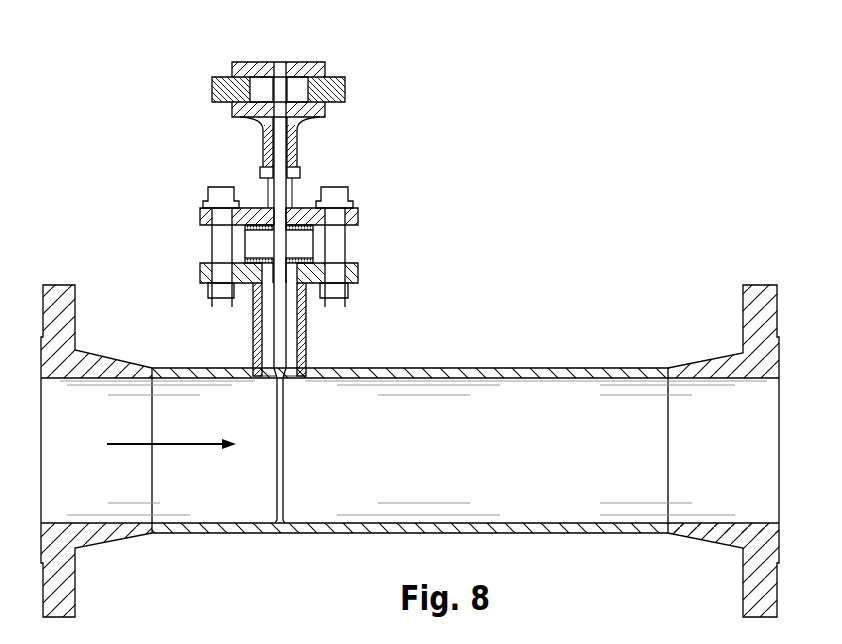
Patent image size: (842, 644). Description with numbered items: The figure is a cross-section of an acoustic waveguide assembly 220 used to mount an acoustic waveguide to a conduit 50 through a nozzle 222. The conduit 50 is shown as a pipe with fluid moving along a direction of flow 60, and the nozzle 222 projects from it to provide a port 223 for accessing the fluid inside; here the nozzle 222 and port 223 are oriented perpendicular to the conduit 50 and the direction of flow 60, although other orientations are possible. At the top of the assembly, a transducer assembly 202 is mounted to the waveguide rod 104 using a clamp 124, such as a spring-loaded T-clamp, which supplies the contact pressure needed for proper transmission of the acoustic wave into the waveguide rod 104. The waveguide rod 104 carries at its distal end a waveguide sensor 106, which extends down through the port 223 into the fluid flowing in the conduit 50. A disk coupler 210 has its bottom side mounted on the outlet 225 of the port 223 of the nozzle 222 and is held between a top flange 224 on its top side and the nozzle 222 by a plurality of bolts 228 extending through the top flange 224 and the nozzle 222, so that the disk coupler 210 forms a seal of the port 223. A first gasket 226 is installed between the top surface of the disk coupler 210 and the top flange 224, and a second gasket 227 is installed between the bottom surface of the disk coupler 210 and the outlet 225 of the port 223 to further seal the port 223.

The conduit 50 is at (437, 372).
The direction of flow 60 is at (130, 443).
The waveguide rod 104 is at (268, 190).
The waveguide sensor 106 is at (282, 450).
The clamp 124 is at (231, 78).
The transducer assembly 202 is at (297, 87).
The disk coupler 210 is at (307, 243).
The acoustic waveguide assembly 220 is at (392, 93).
The nozzle 222 is at (204, 274).
The port 223 is at (289, 376).
The top flange 224 is at (200, 216).
The outlet 225 is at (258, 296).
The first gasket 226 is at (302, 228).
The second gasket 227 is at (330, 300).
The bolts 228 is at (337, 192).